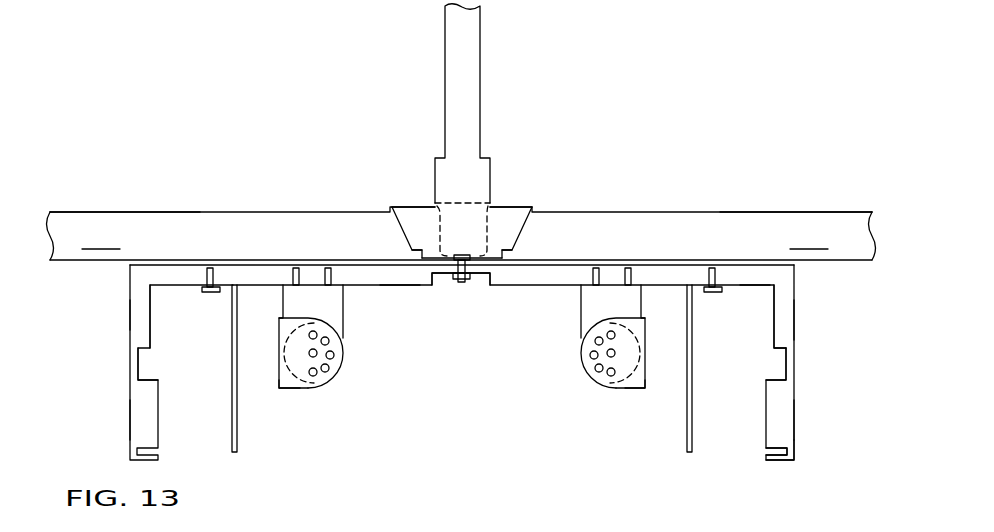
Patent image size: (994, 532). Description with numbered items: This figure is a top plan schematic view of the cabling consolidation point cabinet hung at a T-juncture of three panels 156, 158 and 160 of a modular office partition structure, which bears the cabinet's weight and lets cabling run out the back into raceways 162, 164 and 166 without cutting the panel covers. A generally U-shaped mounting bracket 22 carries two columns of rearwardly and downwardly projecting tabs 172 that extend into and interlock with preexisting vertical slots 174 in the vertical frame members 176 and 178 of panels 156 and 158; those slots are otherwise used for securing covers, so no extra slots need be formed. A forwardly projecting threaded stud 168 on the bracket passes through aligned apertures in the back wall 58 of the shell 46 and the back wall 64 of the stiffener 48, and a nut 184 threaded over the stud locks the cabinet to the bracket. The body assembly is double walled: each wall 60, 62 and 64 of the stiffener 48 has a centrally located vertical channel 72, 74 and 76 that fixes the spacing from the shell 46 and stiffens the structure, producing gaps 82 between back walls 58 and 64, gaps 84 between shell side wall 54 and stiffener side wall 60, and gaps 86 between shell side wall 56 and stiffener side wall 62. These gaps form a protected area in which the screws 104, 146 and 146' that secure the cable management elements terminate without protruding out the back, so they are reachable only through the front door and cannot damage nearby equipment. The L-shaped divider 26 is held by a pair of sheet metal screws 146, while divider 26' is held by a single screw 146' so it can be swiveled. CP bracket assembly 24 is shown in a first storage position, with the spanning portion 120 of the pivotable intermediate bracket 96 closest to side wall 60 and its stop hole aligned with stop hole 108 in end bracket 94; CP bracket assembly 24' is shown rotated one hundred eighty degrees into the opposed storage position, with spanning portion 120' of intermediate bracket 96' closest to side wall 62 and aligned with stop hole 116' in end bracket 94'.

The panel 160 is at (482, 47).
The raceway 166 is at (460, 58).
The raceway 162 is at (101, 238).
The raceway 164 is at (809, 238).
The panel 156 is at (100, 212).
The panel 158 is at (825, 212).
The vertical frame member 176 is at (410, 200).
The vertical frame member 178 is at (510, 203).
The tabs 172 is at (392, 207).
The vertical slots 174 is at (419, 251).
The threaded stud 168 is at (467, 284).
The nut 184 is at (473, 285).
The mounting bracket 22 is at (500, 264).
The back wall 58 is at (655, 263).
The back wall 64 is at (679, 283).
The channel 76 is at (432, 285).
The side wall 54 is at (128, 277).
The side wall 56 is at (797, 295).
The gaps 84 is at (138, 315).
The side wall 60 is at (152, 310).
The channel 72 is at (152, 380).
The side wall 62 is at (775, 338).
The channel 74 is at (768, 372).
The gaps 86 is at (785, 318).
The shell 46 is at (795, 438).
The stiffener 48 is at (765, 440).
The gaps 82 is at (403, 278).
The sheet metal screws 146 is at (205, 236).
The sheet metal screw 146' is at (726, 236).
The screws 104 is at (328, 266).
The divider 26 is at (261, 379).
The divider 26' is at (658, 377).
The end bracket 94 is at (291, 336).
The intermediate bracket 96 is at (329, 340).
The CP bracket assembly 24 is at (333, 368).
The stop hole 108 is at (345, 335).
The spanning portion 120 is at (277, 407).
The end bracket 94' is at (630, 336).
The intermediate bracket 96' is at (587, 357).
The CP bracket assembly 24' is at (582, 375).
The stop hole 116' is at (580, 332).
The spanning portion 120' is at (647, 408).